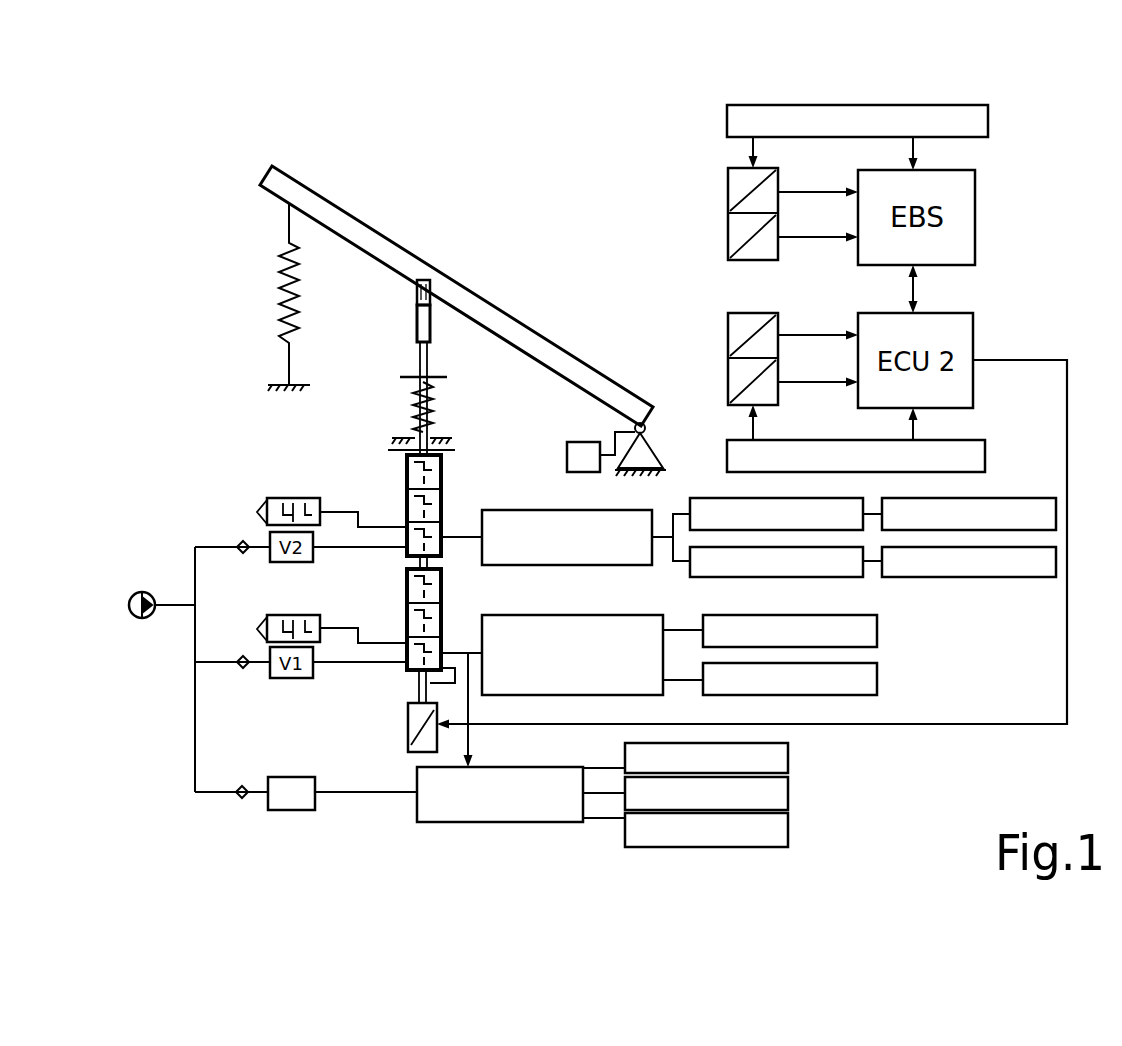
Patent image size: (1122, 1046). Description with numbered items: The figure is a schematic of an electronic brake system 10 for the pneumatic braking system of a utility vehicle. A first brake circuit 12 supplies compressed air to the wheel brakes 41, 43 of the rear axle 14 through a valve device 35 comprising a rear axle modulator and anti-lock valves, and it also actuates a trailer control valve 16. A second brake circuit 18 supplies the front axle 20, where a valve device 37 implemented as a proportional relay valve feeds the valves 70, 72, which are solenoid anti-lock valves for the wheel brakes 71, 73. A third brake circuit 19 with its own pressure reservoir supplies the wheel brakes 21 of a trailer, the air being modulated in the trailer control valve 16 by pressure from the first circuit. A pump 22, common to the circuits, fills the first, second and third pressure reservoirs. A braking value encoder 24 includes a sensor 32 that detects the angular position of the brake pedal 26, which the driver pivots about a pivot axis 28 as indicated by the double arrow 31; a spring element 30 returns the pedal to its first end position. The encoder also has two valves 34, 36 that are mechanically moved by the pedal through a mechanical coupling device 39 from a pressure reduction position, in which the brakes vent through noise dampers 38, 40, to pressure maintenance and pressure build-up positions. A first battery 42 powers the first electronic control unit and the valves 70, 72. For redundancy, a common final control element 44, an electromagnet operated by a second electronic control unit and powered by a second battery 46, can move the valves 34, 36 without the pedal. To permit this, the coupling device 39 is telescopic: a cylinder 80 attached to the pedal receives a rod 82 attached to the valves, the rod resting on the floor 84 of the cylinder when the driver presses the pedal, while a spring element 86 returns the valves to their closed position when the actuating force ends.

The electronic brake system 10 is at (960, 96).
The first brake circuit 12 is at (405, 587).
The rear axle 14 is at (905, 635).
The trailer control valve 16 is at (498, 813).
The second brake circuit 18 is at (316, 485).
The third brake circuit 19 is at (262, 824).
The front axle 20 is at (881, 529).
The wheel brakes of the trailer 21 is at (806, 849).
The pump 22 is at (145, 620).
The braking value encoder 24 is at (468, 252).
The brake pedal 26 is at (315, 196).
The pivot axis 28 is at (650, 426).
The spring element 30 is at (292, 343).
The double arrow 31 is at (589, 407).
The sensor 32 is at (567, 458).
The valve 34 is at (454, 460).
The valve device 35 is at (598, 616).
The valve 36 is at (403, 691).
The valve device 37 is at (513, 548).
The noise damper 38 is at (285, 498).
The mechanical coupling device 39 is at (445, 343).
The noise damper 40 is at (290, 615).
The wheel brake 41 is at (880, 627).
The first battery 42 is at (790, 104).
The wheel brake 43 is at (880, 685).
The final control element 44 is at (409, 748).
The second battery 46 is at (982, 453).
The valve 70 is at (738, 505).
The wheel brake 71 is at (957, 505).
The valve 72 is at (770, 568).
The wheel brake 73 is at (983, 567).
The cylinder 80 is at (417, 318).
The rod 82 is at (429, 360).
The floor 84 is at (425, 280).
The spring element 86 is at (411, 410).